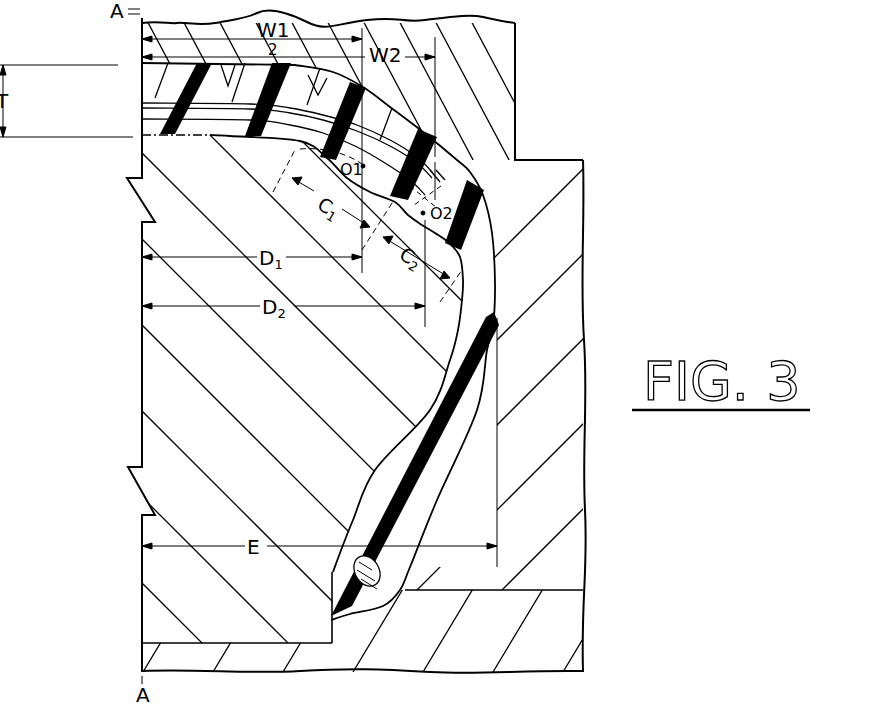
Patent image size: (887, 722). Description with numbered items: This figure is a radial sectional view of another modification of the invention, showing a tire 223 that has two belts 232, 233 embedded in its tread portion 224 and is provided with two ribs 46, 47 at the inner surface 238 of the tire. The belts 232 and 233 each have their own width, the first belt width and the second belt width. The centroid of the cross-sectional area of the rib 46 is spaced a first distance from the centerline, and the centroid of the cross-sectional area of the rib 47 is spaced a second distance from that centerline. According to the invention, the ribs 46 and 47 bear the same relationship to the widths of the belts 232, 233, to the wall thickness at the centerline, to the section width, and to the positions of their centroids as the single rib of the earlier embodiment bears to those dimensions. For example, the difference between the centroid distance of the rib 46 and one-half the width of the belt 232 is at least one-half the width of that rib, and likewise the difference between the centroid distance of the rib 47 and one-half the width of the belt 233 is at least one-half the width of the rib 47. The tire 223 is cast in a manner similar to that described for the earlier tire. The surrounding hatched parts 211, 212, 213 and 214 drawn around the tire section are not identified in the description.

The upper housing member 211 is at (517, 80).
The lower housing member 212 is at (588, 612).
The side housing member 213 is at (583, 217).
The body block 214 is at (142, 323).
The tire 223 is at (487, 292).
The tread portion 224 is at (157, 75).
The belt 232 is at (147, 102).
The belt 233 is at (140, 115).
The inner surface 238 is at (173, 134).
The rib 46 is at (362, 137).
The rib 47 is at (465, 183).